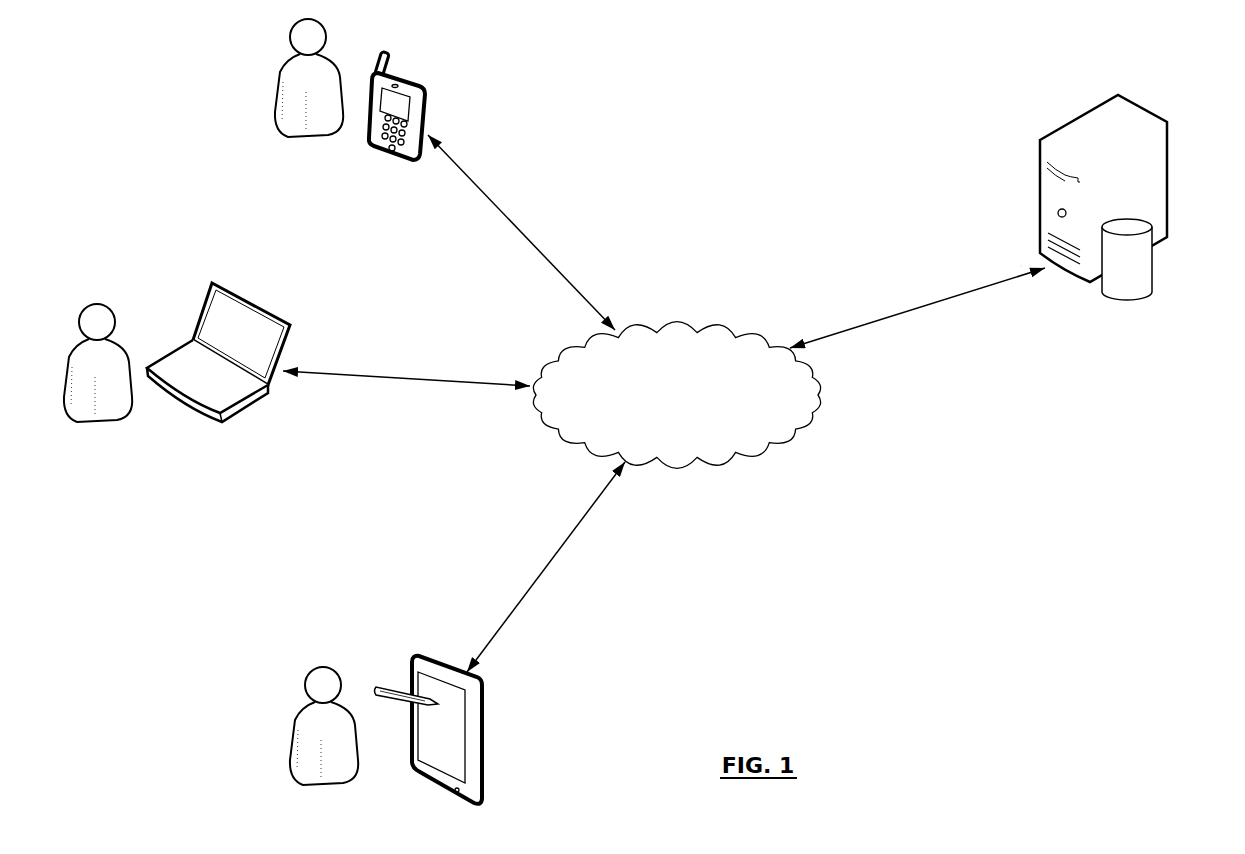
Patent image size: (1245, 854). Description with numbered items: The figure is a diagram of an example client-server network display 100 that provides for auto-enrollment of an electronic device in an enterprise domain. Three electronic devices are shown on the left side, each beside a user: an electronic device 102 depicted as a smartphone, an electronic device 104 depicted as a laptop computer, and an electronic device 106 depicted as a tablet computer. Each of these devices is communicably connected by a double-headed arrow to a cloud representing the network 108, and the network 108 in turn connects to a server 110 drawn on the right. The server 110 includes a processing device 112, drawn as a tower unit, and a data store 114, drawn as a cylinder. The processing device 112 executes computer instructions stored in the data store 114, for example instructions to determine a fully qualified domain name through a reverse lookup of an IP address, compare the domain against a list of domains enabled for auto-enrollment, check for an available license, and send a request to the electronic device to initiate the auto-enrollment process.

The network display 100 is at (800, 62).
The electronic device 102 is at (412, 77).
The electronic device 104 is at (257, 303).
The electronic device 106 is at (420, 652).
The network 108 is at (673, 325).
The server 110 is at (1041, 301).
The processing device 112 is at (1140, 105).
The data store 114 is at (1133, 298).